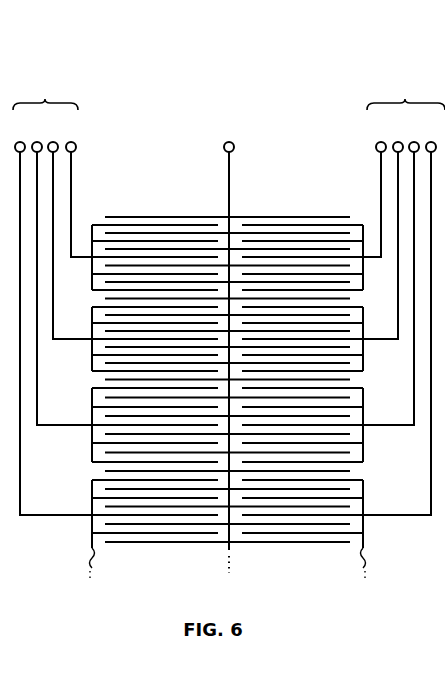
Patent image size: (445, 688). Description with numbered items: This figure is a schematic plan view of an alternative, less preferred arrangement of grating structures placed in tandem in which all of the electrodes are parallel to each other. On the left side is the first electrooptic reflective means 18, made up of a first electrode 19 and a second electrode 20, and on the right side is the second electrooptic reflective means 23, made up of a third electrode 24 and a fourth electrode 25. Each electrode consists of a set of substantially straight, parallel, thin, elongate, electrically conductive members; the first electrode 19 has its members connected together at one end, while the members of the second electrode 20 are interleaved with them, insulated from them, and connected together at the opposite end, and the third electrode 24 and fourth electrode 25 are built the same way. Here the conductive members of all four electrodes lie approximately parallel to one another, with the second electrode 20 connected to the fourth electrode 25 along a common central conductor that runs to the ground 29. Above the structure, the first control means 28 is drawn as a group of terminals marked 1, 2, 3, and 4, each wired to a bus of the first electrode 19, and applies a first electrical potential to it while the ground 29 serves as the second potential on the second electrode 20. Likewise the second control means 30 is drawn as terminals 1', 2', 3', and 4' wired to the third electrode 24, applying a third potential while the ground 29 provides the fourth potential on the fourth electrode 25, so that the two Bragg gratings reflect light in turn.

The first control means 28 is at (45, 91).
The second control means 30 is at (406, 91).
The terminal 1 is at (79, 188).
The terminal 2 is at (69, 229).
The terminal 3 is at (61, 272).
The terminal 4 is at (51, 317).
The terminal 1' is at (374, 188).
The terminal 2' is at (384, 229).
The terminal 3' is at (393, 272).
The terminal 4' is at (402, 317).
The ground 29 is at (233, 150).
The first electrooptic reflective means 18 is at (108, 542).
The first electrode 19 is at (90, 222).
The second electrode 20 is at (211, 216).
The second electrooptic reflective means 23 is at (335, 553).
The third electrode 24 is at (366, 222).
The fourth electrode 25 is at (277, 216).